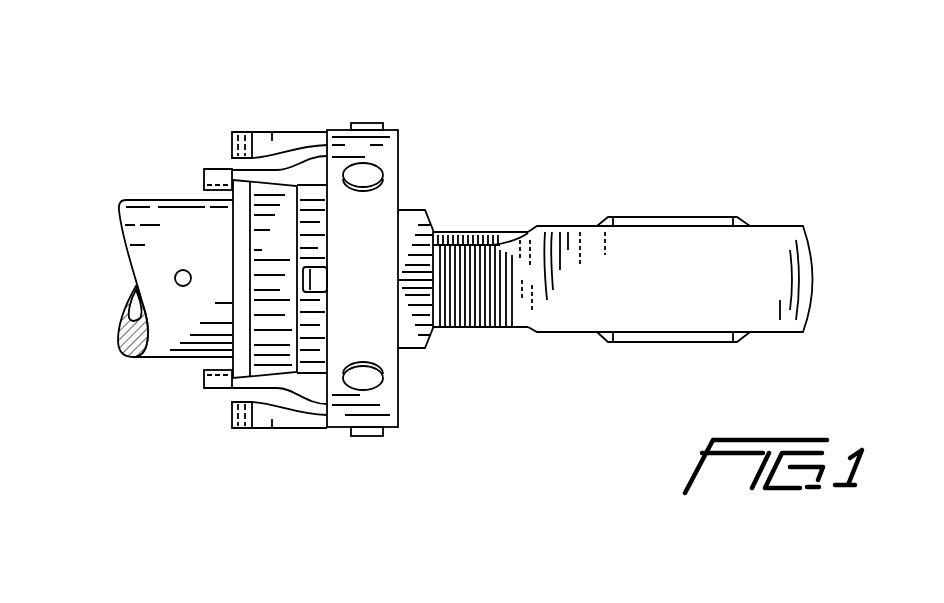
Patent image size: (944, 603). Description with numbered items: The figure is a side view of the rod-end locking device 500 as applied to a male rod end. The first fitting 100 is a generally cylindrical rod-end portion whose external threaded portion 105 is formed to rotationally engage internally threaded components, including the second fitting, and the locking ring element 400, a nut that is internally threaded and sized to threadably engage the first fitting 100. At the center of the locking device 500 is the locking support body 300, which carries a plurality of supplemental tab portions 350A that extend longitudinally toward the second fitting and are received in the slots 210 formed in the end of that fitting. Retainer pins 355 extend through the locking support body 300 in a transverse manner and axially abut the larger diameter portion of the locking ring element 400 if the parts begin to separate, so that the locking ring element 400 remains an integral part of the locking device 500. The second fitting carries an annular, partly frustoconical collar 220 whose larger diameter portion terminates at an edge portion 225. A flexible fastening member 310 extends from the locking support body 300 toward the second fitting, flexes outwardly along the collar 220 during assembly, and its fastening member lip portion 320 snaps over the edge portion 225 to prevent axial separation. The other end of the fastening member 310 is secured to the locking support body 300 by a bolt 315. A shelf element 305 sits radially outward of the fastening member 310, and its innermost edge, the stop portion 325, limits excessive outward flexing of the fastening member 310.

The first fitting 100 is at (578, 243).
The external threaded portion 105 is at (485, 295).
The slots 210 is at (310, 277).
The collar 220 is at (243, 236).
The edge portion 225 is at (205, 190).
The locking support body 300 is at (335, 135).
The shelf element 305 is at (293, 131).
The fastening member 310 is at (205, 170).
The bolt 315 is at (367, 123).
The fastening member lip portion 320 is at (218, 168).
The stop portion 325 is at (247, 131).
The supplemental tab portions 350A is at (320, 275).
The retainer pins 355 is at (375, 175).
The locking ring element 400 is at (428, 223).
The rod-end locking device 500 is at (395, 439).